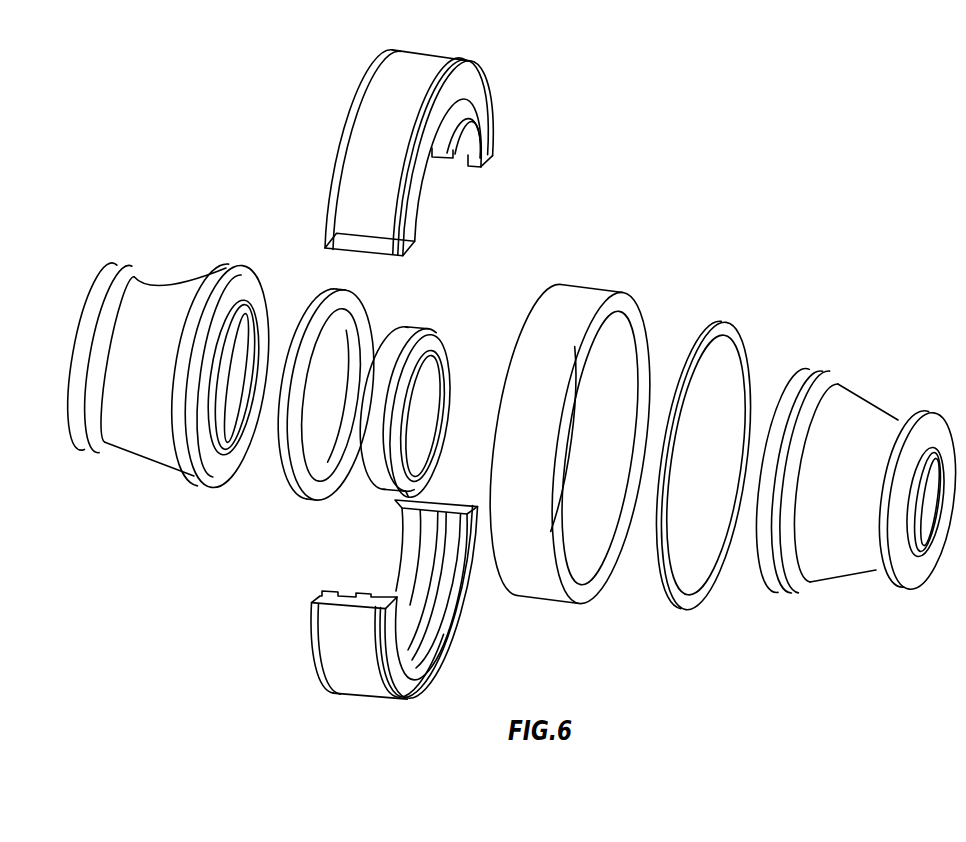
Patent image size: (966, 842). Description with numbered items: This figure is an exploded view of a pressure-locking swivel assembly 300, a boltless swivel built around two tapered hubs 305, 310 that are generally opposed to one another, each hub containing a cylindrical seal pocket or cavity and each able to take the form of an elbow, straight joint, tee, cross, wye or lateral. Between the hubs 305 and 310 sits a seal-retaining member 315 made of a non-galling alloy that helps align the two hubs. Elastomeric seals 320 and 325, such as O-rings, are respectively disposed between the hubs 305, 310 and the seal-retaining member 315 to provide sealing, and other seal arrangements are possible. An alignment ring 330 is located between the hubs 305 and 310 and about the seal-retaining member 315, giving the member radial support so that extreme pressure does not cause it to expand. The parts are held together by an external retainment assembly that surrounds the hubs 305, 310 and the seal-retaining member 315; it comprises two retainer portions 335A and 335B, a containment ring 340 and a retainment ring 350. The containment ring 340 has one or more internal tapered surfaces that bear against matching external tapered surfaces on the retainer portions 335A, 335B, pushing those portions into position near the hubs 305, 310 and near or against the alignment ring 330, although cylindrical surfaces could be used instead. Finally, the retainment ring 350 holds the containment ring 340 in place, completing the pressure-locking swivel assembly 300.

The pressure-locking swivel assembly 300 is at (198, 112).
The tapered hub 305 is at (173, 288).
The tapered hub 310 is at (852, 412).
The seal-retaining member 315 is at (420, 318).
The elastomeric seal 320 is at (385, 323).
The elastomeric seal 325 is at (450, 342).
The alignment ring 330 is at (303, 503).
The retainer portion 335A is at (422, 67).
The retainer portion 335B is at (450, 672).
The containment ring 340 is at (583, 297).
The retainment ring 350 is at (748, 323).